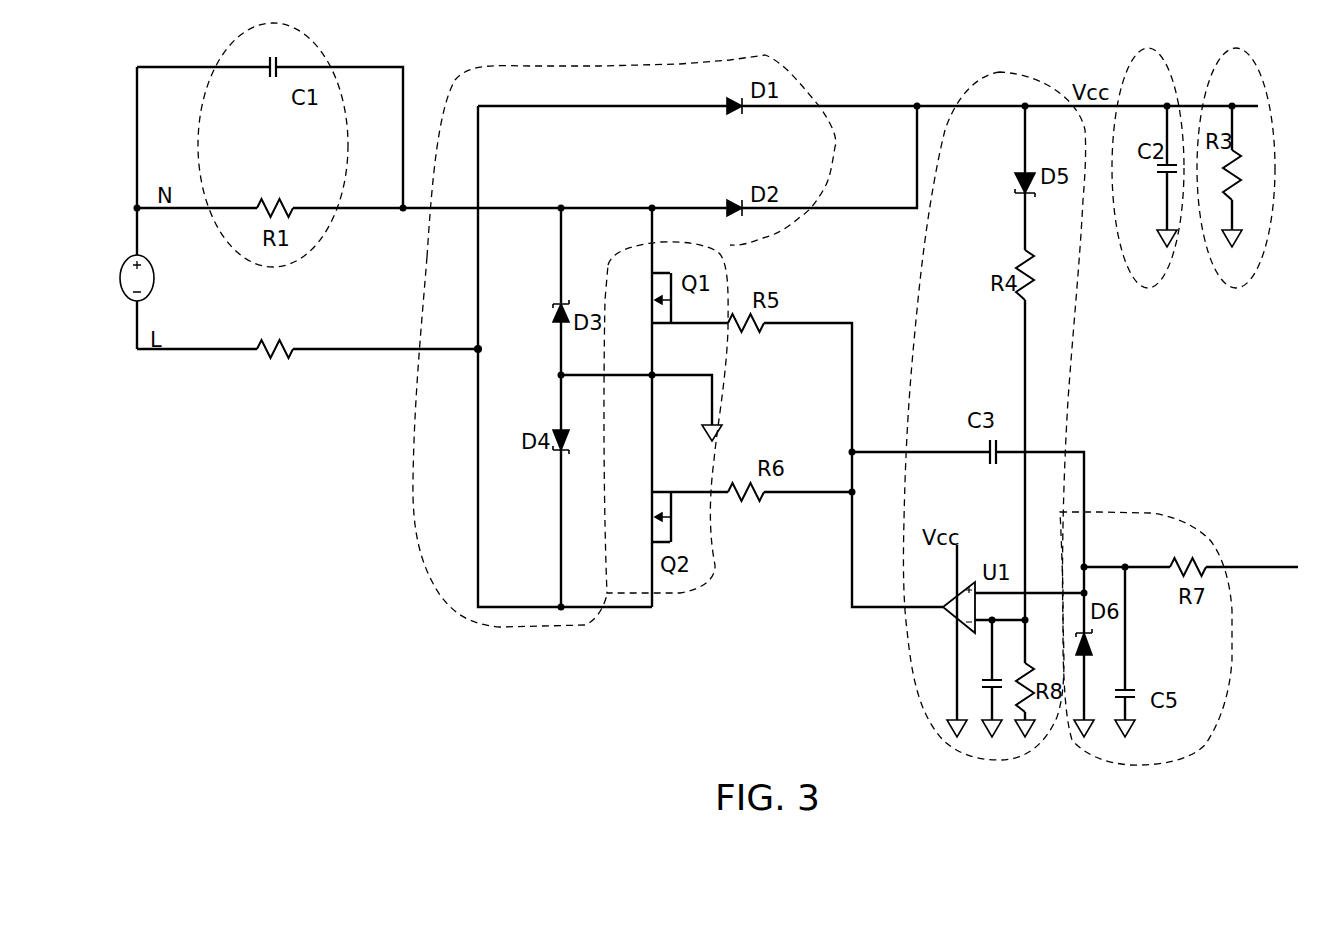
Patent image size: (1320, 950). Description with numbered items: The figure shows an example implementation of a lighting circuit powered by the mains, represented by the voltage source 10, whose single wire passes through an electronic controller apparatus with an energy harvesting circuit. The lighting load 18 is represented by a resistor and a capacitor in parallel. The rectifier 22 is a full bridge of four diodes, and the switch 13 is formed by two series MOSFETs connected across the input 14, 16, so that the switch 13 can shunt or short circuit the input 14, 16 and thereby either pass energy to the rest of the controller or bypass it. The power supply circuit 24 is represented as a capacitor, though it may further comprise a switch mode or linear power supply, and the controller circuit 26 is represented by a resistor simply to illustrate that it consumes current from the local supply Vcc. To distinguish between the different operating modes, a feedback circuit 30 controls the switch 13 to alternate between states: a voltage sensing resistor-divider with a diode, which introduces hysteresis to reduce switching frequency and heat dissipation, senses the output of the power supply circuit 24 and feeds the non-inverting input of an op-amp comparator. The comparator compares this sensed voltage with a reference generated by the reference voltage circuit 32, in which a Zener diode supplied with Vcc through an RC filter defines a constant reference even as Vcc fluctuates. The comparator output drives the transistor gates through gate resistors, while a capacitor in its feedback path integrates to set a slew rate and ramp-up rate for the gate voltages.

The voltage source 10 is at (155, 280).
The switch 13 is at (716, 576).
The input 14 is at (396, 211).
The input 16 is at (478, 349).
The lighting load 18 is at (320, 64).
The rectifier 22 is at (415, 430).
The power supply circuit 24 is at (1148, 290).
The controller circuit 26 is at (1216, 290).
The feedback circuit 30 is at (962, 93).
The reference voltage circuit 32 is at (1160, 520).